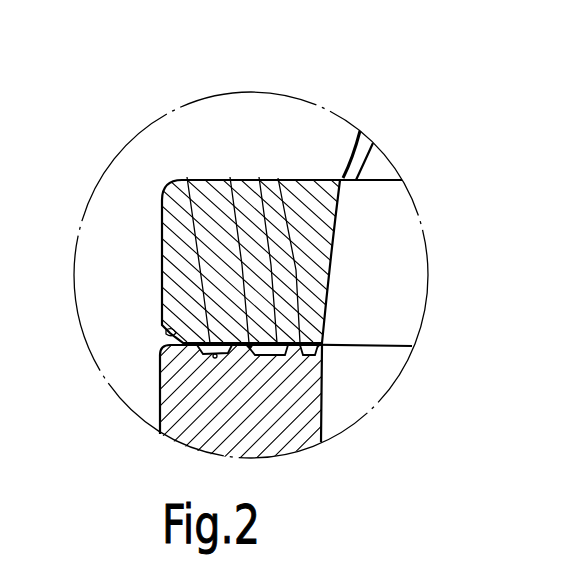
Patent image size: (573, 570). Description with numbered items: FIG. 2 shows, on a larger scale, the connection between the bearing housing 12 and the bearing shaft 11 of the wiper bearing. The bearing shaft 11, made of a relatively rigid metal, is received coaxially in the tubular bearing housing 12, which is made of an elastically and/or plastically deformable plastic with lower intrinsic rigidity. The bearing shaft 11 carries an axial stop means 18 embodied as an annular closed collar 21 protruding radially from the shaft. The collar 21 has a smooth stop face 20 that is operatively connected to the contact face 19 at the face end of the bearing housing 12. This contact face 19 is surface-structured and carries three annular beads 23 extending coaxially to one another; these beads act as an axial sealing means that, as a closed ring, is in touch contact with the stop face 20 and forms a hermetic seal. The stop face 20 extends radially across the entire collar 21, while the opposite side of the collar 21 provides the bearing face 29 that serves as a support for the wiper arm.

The bearing shaft 11 is at (342, 377).
The bearing housing 12 is at (190, 397).
The axial stop means 18 is at (160, 217).
The contact face 19 is at (259, 177).
The stop face 20 is at (187, 177).
The collar 21 is at (294, 220).
The annular beads 23 is at (230, 177).
The bearing face 29 is at (278, 178).